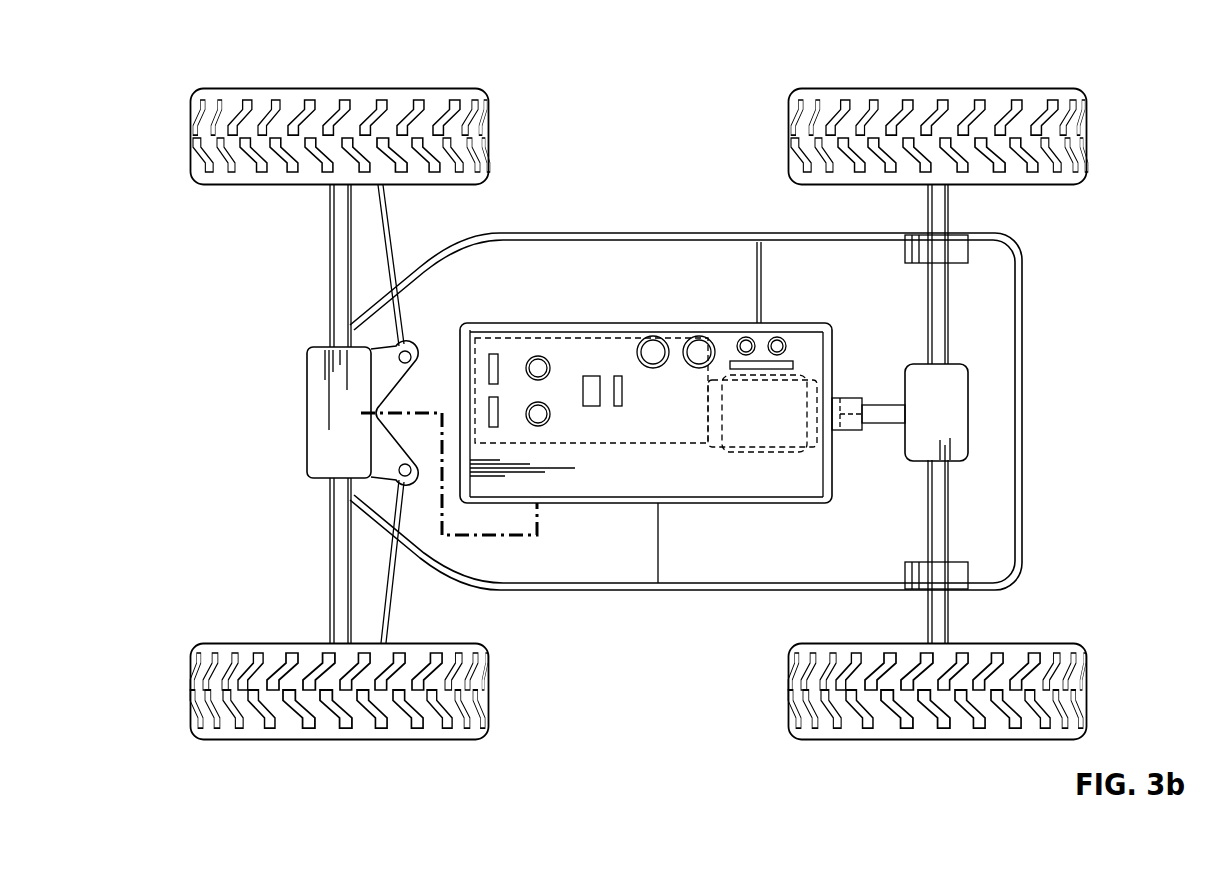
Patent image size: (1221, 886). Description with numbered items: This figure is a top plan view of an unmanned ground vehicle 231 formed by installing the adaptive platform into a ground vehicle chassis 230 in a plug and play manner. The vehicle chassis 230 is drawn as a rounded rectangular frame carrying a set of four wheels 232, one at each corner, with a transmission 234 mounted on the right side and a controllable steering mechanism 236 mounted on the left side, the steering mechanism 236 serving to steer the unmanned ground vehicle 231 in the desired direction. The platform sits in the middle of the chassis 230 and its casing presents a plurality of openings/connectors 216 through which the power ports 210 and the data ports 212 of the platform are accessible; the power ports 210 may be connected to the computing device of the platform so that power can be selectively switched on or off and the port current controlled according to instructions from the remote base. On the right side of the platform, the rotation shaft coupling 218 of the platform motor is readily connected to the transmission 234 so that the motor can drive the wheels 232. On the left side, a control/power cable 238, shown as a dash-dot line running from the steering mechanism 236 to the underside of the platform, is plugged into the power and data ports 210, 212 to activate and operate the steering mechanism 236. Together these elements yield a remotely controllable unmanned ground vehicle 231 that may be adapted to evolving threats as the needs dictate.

The unmanned ground vehicle 231 is at (268, 72).
The wheels 232 is at (788, 114).
The vehicle chassis 230 is at (1023, 497).
The transmission 234 is at (993, 378).
The controllable steering mechanism 236 is at (296, 372).
The control/power cable 238 is at (500, 542).
The openings/connectors 216 is at (798, 322).
The power ports 210 is at (605, 542).
The data ports 212 is at (820, 542).
The rotation shaft coupling 218 is at (845, 395).